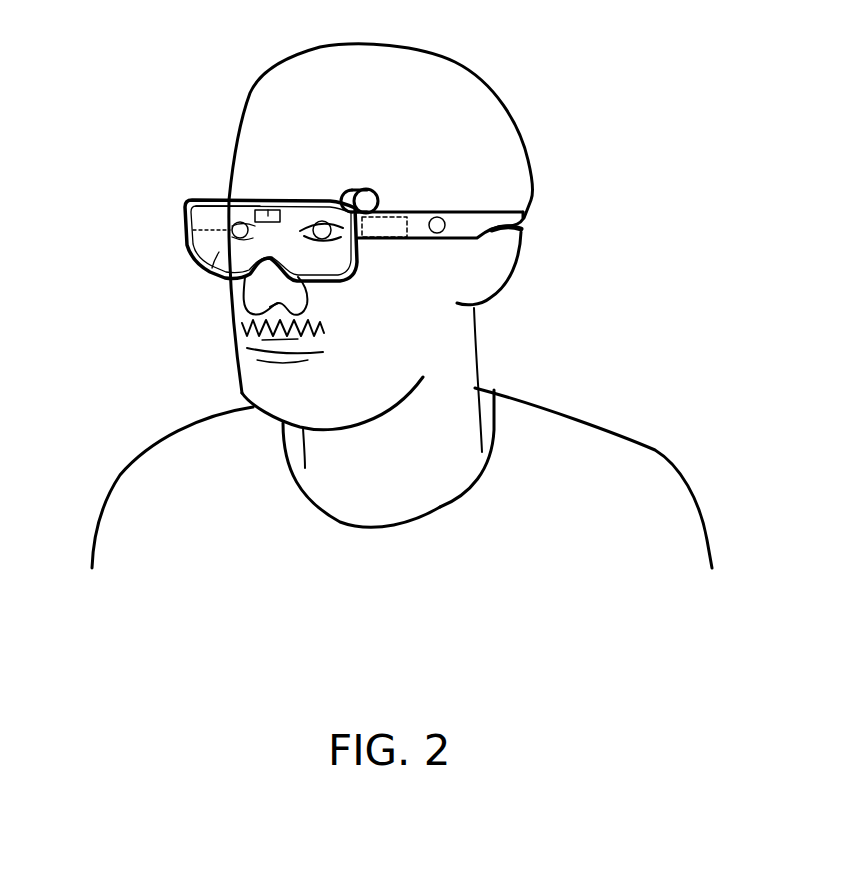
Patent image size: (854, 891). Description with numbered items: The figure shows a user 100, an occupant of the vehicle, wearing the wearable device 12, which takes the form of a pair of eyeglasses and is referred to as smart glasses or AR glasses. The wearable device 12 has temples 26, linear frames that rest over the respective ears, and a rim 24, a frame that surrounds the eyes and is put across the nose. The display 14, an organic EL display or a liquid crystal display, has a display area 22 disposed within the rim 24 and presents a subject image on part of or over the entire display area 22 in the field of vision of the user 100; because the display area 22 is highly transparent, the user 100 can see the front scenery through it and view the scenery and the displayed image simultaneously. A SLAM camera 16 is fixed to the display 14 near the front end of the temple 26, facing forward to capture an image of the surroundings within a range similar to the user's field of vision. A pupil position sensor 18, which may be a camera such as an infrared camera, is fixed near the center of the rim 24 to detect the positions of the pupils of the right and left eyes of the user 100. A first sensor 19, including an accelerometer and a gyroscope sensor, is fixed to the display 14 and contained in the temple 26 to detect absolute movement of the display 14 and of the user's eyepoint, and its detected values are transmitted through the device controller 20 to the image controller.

The wearable device 12 is at (316, 216).
The display 14 is at (203, 268).
The display area 22 is at (271, 240).
The SLAM camera 16 is at (363, 193).
The pupil position sensor 18 is at (268, 210).
The rim 24 is at (200, 200).
The temples 26 is at (458, 212).
The first sensor 19 is at (447, 223).
The device controller 20 is at (407, 228).
The user 100 is at (657, 449).